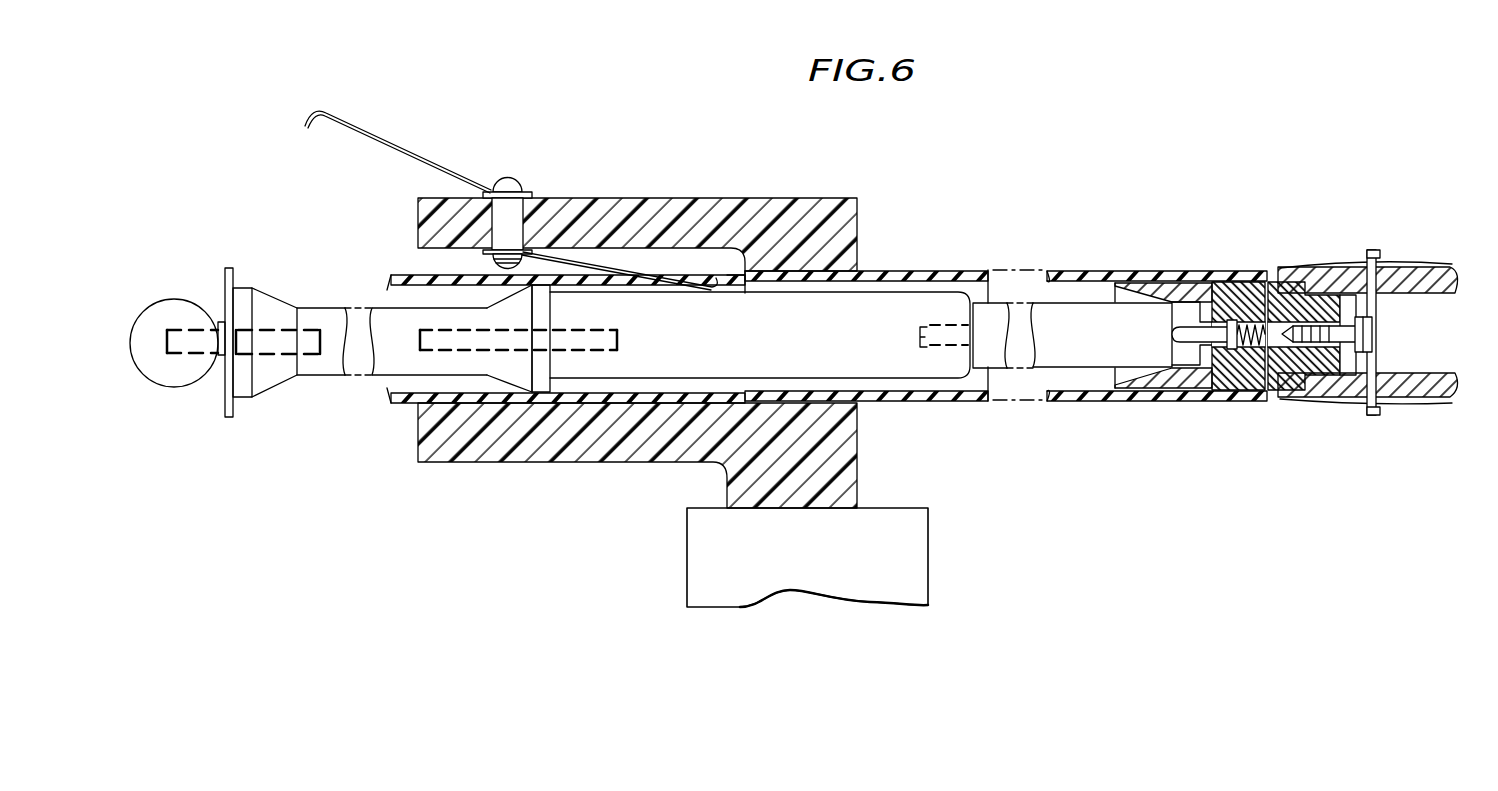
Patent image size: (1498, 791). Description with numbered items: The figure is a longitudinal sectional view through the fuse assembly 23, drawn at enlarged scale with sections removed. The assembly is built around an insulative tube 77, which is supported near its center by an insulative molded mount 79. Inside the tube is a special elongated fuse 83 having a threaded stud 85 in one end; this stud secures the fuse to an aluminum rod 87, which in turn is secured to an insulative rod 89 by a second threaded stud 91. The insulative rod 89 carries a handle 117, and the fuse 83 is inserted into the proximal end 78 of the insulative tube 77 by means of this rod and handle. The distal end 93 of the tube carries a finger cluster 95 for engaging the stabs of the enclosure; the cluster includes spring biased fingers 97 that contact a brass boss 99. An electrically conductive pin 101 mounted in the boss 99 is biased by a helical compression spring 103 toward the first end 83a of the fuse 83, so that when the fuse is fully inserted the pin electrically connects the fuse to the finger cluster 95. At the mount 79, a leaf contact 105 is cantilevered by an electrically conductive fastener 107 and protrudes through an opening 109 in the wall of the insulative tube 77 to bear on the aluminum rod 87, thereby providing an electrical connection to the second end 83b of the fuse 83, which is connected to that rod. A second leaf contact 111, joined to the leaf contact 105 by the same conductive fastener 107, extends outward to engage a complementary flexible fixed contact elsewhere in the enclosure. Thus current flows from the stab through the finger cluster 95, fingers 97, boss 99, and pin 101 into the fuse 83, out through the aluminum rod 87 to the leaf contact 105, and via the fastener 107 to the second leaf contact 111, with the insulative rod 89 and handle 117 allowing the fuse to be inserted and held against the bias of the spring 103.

The fuse assembly 23 is at (1200, 236).
The insulative tube 77 is at (918, 270).
The proximal end 78 is at (398, 277).
The insulative molded mount 79 is at (847, 220).
The fuse 83 is at (1069, 362).
The first end of the fuse 83a is at (1181, 330).
The second end of the fuse 83b is at (968, 355).
The threaded stud 85 is at (918, 337).
The aluminum rod 87 is at (666, 375).
The insulative rod 89 is at (313, 307).
The threaded stud 91 is at (620, 336).
The distal end 93 is at (1258, 275).
The finger cluster 95 is at (1404, 252).
The spring biased fingers 97 is at (1438, 372).
The brass boss 99 is at (1250, 396).
The electrically conductive pin 101 is at (1182, 342).
The helical compression spring 103 is at (1269, 380).
The leaf contact 105 is at (580, 263).
The electrically conductive fastener 107 is at (515, 212).
The opening 109 is at (732, 276).
The second leaf contact 111 is at (372, 132).
The handle 117 is at (164, 378).